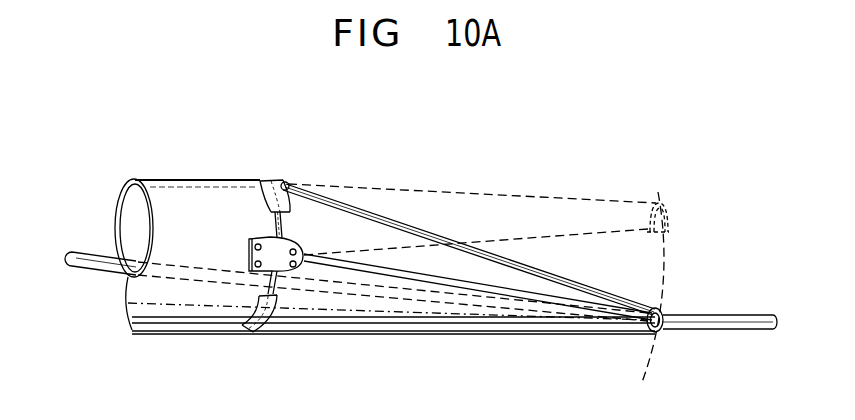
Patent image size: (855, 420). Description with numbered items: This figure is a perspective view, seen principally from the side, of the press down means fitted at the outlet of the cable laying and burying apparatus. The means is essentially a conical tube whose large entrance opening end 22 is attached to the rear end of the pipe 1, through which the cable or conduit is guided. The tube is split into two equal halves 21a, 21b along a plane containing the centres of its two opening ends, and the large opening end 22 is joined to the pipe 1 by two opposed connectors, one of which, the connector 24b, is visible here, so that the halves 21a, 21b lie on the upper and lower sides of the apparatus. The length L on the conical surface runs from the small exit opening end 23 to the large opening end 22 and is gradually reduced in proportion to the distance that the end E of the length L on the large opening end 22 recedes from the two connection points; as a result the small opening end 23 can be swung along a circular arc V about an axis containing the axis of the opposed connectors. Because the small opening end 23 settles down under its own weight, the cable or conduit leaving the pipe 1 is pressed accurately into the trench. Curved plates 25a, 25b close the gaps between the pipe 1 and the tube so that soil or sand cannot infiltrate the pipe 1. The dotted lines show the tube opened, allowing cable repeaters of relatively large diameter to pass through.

The pipe 1 is at (172, 190).
The curved plate 25b is at (270, 178).
The end of the length L E is at (289, 184).
The large entrance opening end 22 is at (274, 226).
The connector 24b is at (281, 248).
The curved plate 25a is at (270, 328).
The tube half 21a is at (580, 215).
The length on the conical surface L is at (456, 242).
The tube half 21b is at (556, 325).
The small exit opening end 23 is at (663, 311).
The circular arc V is at (667, 266).